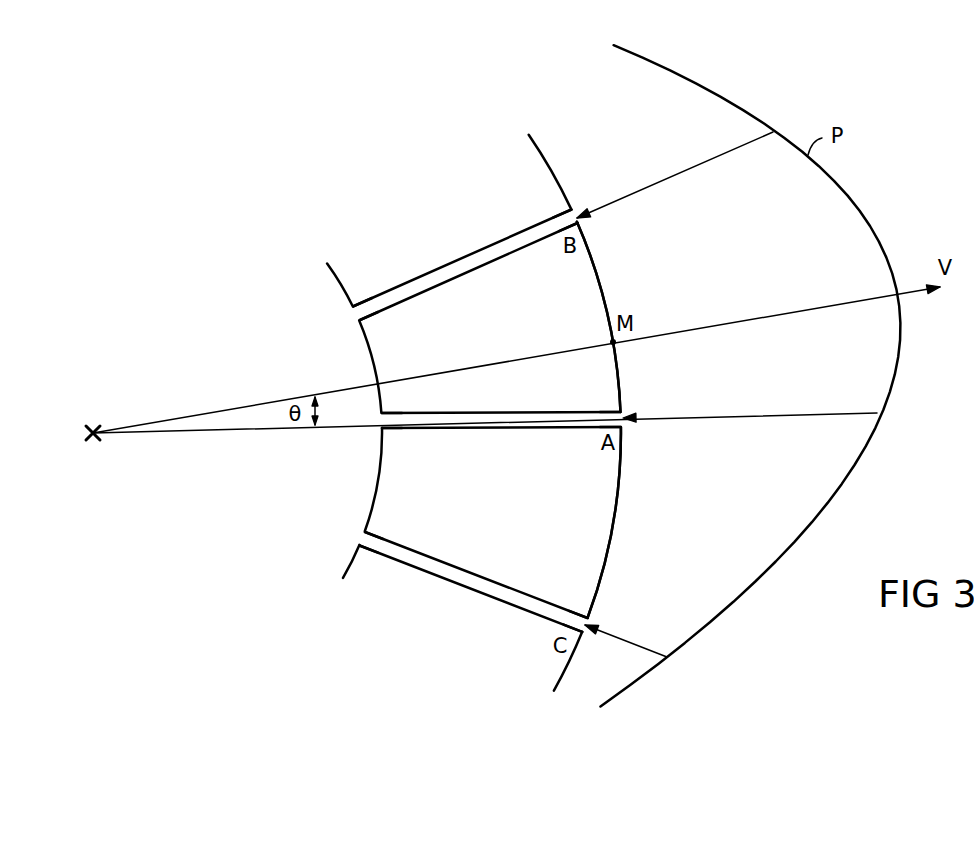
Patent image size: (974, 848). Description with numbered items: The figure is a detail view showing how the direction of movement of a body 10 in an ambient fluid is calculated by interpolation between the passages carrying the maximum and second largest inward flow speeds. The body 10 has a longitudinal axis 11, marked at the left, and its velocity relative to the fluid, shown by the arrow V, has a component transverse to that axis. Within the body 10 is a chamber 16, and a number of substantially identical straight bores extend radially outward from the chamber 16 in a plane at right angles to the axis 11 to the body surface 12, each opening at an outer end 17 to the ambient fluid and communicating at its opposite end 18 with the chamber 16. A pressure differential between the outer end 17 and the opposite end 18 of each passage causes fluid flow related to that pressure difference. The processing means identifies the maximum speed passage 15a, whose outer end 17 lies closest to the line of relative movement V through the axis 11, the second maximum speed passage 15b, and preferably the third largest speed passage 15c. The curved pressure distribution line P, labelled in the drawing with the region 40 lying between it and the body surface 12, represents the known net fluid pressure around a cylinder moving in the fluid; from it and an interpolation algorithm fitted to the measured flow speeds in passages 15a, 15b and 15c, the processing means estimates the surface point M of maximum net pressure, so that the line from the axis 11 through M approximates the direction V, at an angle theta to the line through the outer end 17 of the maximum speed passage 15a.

The body 10 is at (610, 550).
The longitudinal axis 11 is at (93, 421).
The body surface 12 is at (620, 485).
The maximum speed passage 15a is at (508, 414).
The second maximum speed passage 15b is at (502, 247).
The third largest speed passage 15c is at (500, 592).
The chamber 16 is at (210, 362).
The outer end 17 is at (573, 212).
The opposite end 18 is at (357, 318).
The parabolic reflector region 40 is at (777, 215).